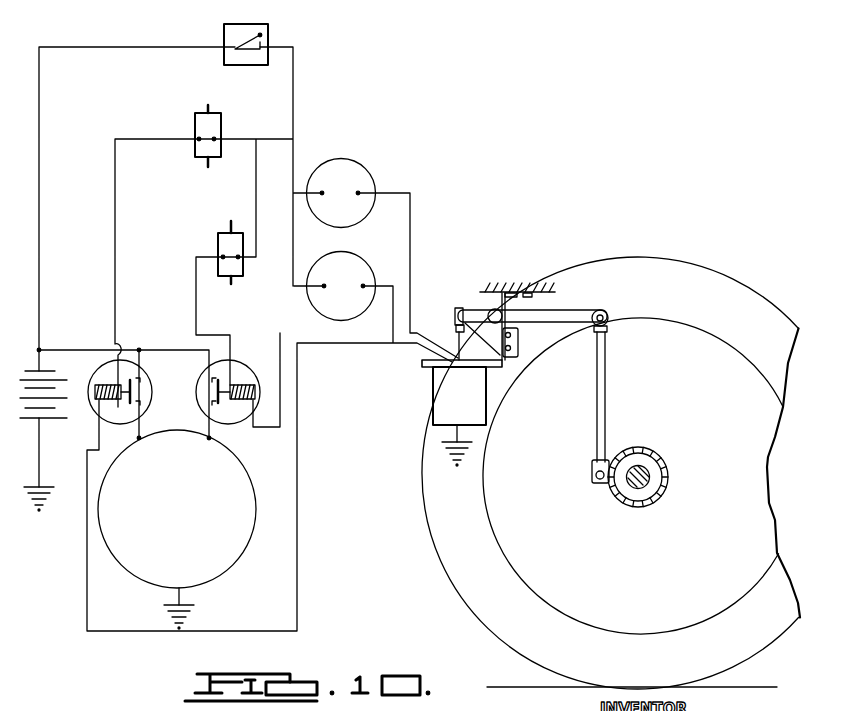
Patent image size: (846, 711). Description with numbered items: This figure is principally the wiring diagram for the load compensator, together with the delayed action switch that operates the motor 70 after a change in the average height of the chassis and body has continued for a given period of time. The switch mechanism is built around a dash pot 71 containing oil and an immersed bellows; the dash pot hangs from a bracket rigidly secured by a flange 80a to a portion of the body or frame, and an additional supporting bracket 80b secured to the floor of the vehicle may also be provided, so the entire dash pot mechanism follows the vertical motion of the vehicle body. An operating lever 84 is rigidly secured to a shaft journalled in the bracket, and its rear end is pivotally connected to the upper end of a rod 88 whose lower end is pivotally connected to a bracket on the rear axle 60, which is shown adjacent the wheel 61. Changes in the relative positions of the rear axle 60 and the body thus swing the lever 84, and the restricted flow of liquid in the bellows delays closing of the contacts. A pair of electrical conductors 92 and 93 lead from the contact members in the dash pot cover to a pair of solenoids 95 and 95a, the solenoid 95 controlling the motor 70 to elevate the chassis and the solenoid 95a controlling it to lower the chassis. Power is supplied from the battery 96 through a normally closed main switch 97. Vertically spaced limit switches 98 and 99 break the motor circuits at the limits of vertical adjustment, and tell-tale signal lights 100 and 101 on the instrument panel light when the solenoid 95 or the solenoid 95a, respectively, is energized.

The main switch 97 is at (267, 37).
The limit switch 99 is at (195, 118).
The limit switch 98 is at (240, 270).
The tell-tale signal light 100 is at (360, 168).
The tell-tale signal light 101 is at (347, 257).
The battery 96 is at (57, 381).
The solenoid 95 is at (255, 391).
The solenoid 95a is at (117, 418).
The motor 70 is at (227, 480).
The dash pot 71 is at (433, 383).
The electrical conductor 92 is at (467, 367).
The electrical conductor 93 is at (442, 368).
The additional supporting bracket 80b is at (493, 290).
The flange 80a is at (518, 340).
The operating lever 84 is at (568, 308).
The rod 88 is at (600, 383).
The drum 61 is at (662, 267).
The rear axle 60 is at (657, 458).